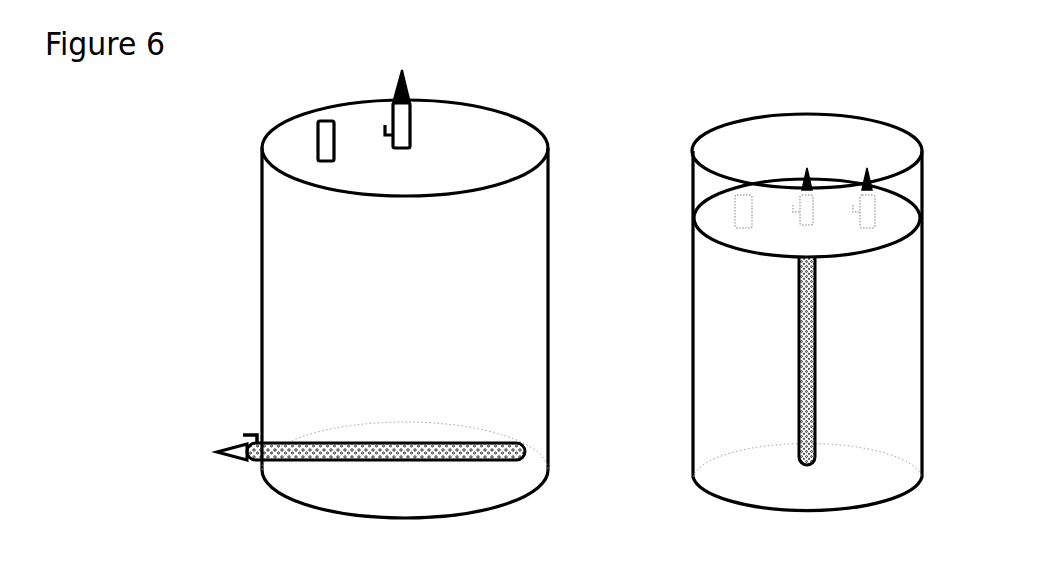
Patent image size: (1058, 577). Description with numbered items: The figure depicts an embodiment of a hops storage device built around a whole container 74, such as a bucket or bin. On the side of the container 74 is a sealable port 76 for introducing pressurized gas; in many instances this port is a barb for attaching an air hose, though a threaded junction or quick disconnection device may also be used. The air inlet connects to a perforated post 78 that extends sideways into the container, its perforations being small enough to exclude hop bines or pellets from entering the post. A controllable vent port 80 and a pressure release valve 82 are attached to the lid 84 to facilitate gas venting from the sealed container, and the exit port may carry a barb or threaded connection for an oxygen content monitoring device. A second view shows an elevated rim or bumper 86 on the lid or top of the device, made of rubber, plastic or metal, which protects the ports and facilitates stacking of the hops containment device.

The container 74 is at (252, 305).
The sealable port 76 is at (238, 432).
The perforated post 78 is at (372, 467).
The controllable vent port 80 is at (385, 122).
The pressure release valve 82 is at (312, 160).
The lid 84 is at (481, 122).
The elevated rim or bumper 86 is at (692, 185).